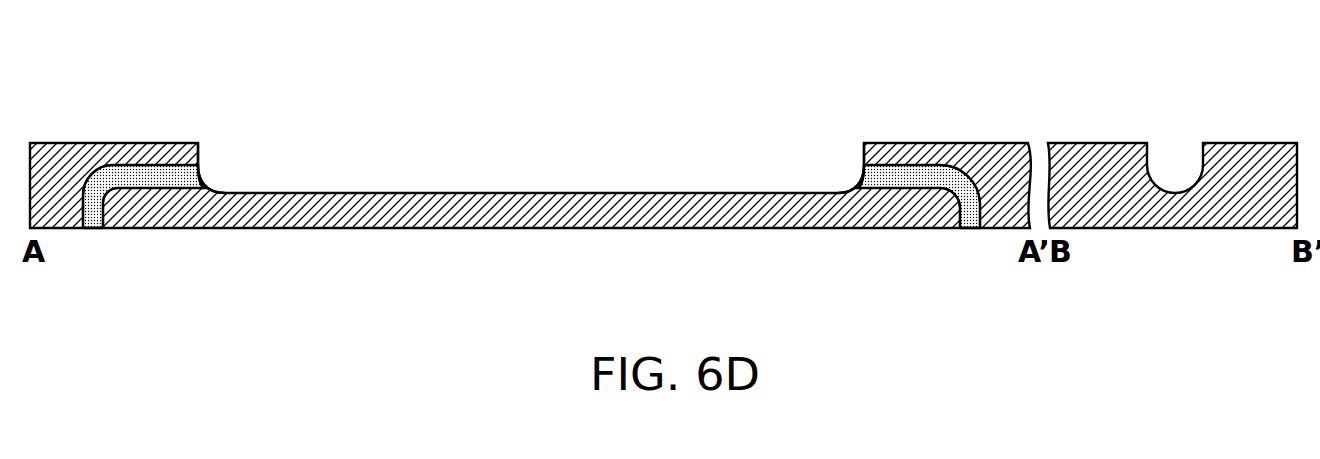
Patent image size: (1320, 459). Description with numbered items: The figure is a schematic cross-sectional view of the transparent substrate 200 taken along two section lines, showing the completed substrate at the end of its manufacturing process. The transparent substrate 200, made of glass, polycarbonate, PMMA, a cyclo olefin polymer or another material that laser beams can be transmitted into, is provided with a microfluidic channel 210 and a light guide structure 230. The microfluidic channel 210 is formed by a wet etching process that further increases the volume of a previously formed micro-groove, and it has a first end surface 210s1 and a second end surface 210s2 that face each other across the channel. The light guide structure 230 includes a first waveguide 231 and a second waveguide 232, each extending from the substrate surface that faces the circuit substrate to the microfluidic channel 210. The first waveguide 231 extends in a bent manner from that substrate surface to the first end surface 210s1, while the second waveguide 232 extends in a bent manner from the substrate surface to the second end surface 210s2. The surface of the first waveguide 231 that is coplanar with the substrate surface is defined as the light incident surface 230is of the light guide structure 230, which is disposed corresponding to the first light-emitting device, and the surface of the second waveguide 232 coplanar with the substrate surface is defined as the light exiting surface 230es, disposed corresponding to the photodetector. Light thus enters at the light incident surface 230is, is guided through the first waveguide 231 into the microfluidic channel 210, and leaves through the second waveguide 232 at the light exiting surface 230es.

The transparent substrate 200 is at (60, 160).
The microfluidic channel 210 is at (510, 158).
The first end surface 210s1 is at (851, 152).
The second end surface 210s2 is at (212, 152).
The light guide structure 230 is at (536, 124).
The first waveguide 231 is at (940, 172).
The second waveguide 232 is at (125, 173).
The light exiting surface 230es is at (95, 242).
The light incident surface 230is is at (970, 242).